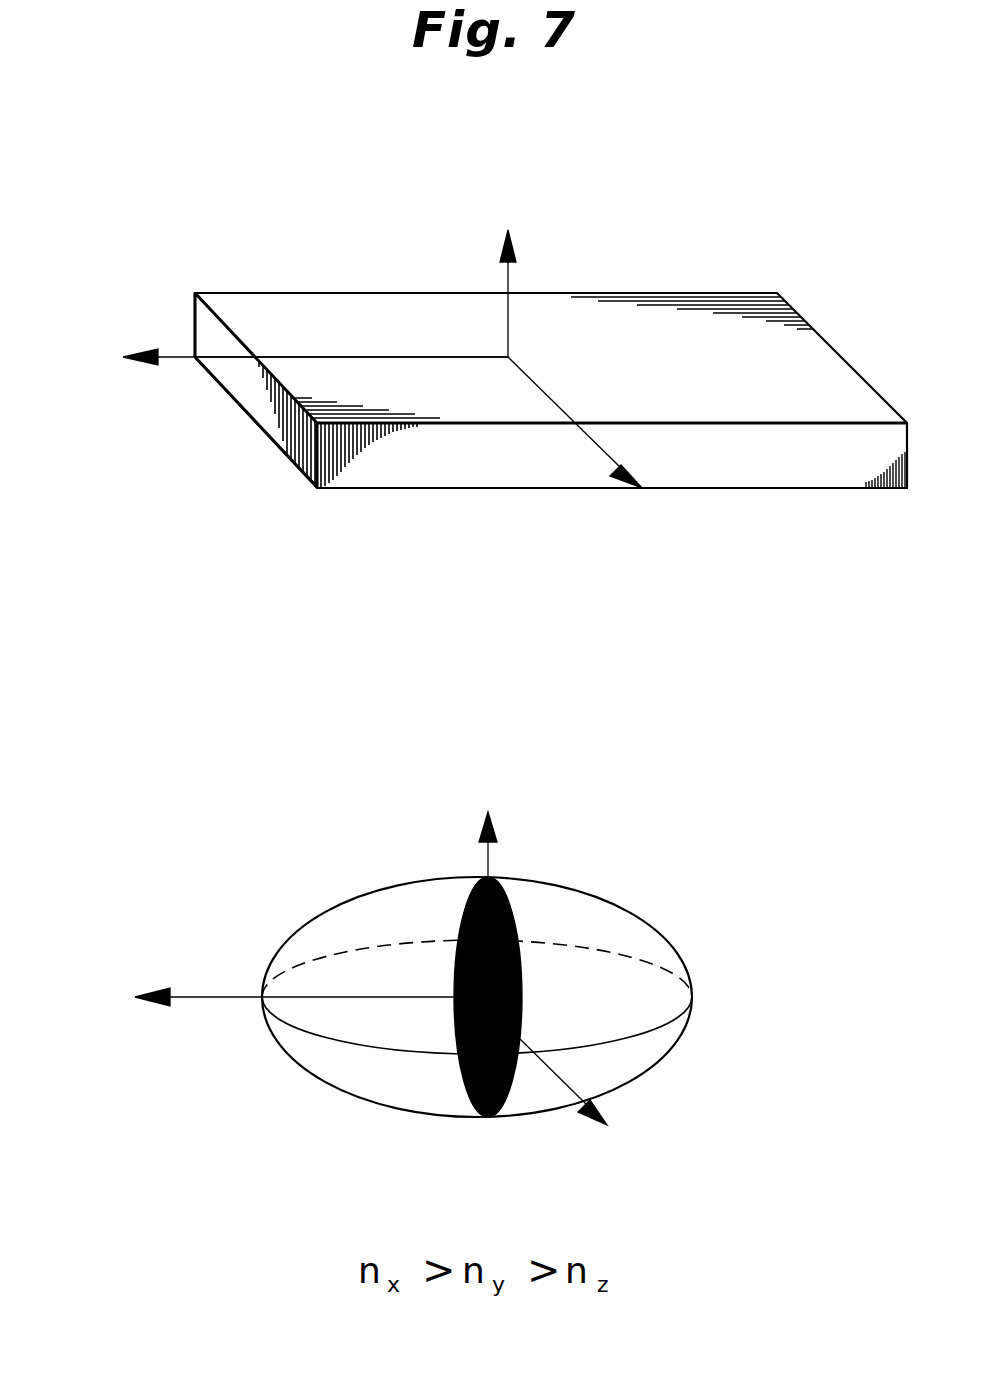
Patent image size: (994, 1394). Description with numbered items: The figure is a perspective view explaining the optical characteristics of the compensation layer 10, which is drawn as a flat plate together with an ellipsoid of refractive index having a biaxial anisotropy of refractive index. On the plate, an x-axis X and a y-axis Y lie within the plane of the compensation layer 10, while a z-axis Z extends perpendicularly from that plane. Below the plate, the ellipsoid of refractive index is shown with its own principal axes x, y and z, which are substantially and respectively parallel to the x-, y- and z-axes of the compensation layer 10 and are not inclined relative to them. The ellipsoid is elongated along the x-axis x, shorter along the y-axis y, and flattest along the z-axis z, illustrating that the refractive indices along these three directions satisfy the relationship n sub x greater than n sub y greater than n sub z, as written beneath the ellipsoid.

The compensation layer 10 is at (826, 316).
The x-axis X is at (294, 354).
The y-axis Y is at (578, 449).
The z-axis Z is at (508, 269).
The x-axis x is at (275, 996).
The y-axis y is at (575, 1101).
The z-axis z is at (486, 822).